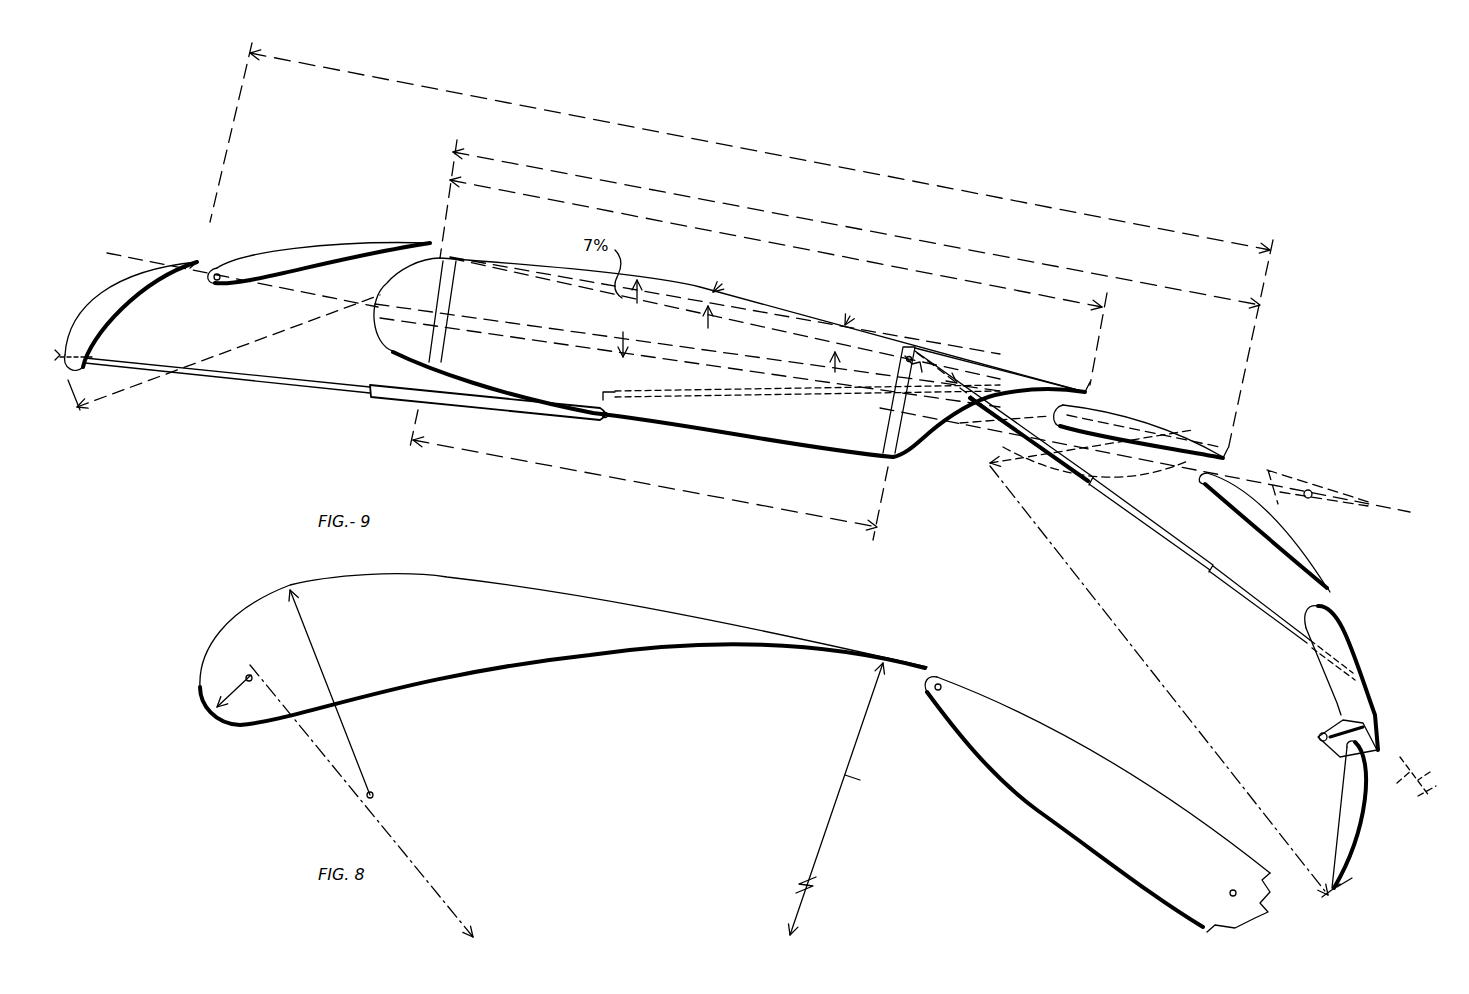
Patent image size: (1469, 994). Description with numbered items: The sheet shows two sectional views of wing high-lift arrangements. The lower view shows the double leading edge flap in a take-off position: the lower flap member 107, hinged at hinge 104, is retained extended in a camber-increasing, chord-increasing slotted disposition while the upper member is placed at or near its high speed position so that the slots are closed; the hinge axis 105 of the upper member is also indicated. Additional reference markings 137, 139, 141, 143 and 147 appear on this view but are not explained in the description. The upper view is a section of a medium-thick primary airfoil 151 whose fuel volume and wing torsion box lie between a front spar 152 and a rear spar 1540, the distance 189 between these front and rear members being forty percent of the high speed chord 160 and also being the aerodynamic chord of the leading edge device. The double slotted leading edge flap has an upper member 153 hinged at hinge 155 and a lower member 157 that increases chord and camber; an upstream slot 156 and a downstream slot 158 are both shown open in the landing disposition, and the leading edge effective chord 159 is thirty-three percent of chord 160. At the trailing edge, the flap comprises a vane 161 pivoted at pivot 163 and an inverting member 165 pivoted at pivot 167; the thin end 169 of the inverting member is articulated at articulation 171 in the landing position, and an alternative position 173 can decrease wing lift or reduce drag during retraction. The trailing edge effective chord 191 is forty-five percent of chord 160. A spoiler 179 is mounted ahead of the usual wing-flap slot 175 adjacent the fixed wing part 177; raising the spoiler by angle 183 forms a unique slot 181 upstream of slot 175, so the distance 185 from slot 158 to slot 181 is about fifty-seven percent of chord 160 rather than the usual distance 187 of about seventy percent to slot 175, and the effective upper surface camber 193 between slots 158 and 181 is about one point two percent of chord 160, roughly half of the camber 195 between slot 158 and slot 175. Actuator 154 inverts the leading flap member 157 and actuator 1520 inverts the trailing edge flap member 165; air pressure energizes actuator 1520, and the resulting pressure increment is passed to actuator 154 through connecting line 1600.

In FIG. 8, the hinge 104 is at (945, 688).
In FIG. 8, the hinge axis 105 is at (1234, 889).
In FIG. 8, the lower flap member 107 is at (543, 662).
In FIG. 8, the radius line 137 is at (345, 732).
In FIG. 8, the pivot point 139 is at (372, 800).
In FIG. 8, the radius line 141 is at (840, 775).
In FIG. 8, the center of rotation 143 is at (566, 801).
In FIG. 8, the leading edge radius 147 is at (255, 682).
In FIG. 9, the primary airfoil 151 is at (665, 405).
In FIG. 9, the front spar 152 is at (462, 392).
In FIG. 9, the actuator 1520 is at (1064, 460).
In FIG. 9, the upper member 153 is at (350, 243).
In FIG. 9, the actuator 154 is at (530, 403).
In FIG. 9, the rear spar 1540 is at (885, 436).
In FIG. 9, the hinge 155 is at (218, 274).
In FIG. 9, the upstream slot 156 is at (186, 277).
In FIG. 9, the lower member 157 is at (112, 304).
In FIG. 9, the downstream slot 158 is at (443, 277).
In FIG. 9, the leading edge effective chord 159 is at (268, 334).
In FIG. 9, the high speed chord 160 is at (748, 140).
In FIG. 9, the connecting line 1600 is at (745, 415).
In FIG. 9, the vane 161 is at (1276, 555).
In FIG. 9, the pivot 163 is at (1200, 480).
In FIG. 9, the inverting member 165 is at (1328, 676).
In FIG. 9, the pivot 167 is at (1310, 492).
In FIG. 9, the thin end 169 is at (1340, 805).
In FIG. 9, the articulation 171 is at (1316, 738).
In FIG. 9, the position 173 is at (1432, 768).
In FIG. 9, the wing-flap slot 175 is at (1238, 474).
In FIG. 9, the fixed wing part 177 is at (1160, 421).
In FIG. 9, the spoiler 179 is at (1000, 373).
In FIG. 9, the slot 181 is at (1088, 392).
In FIG. 9, the angle 183 is at (972, 368).
In FIG. 9, the distance 185 is at (765, 238).
In FIG. 9, the distance 187 is at (826, 222).
In FIG. 9, the aerodynamic chord 189 is at (678, 494).
In FIG. 9, the trailing edge effective chord 191 is at (1330, 596).
In FIG. 9, the effective upper surface camber 193 is at (715, 276).
In FIG. 9, the effective upper surface camber 195 is at (849, 304).